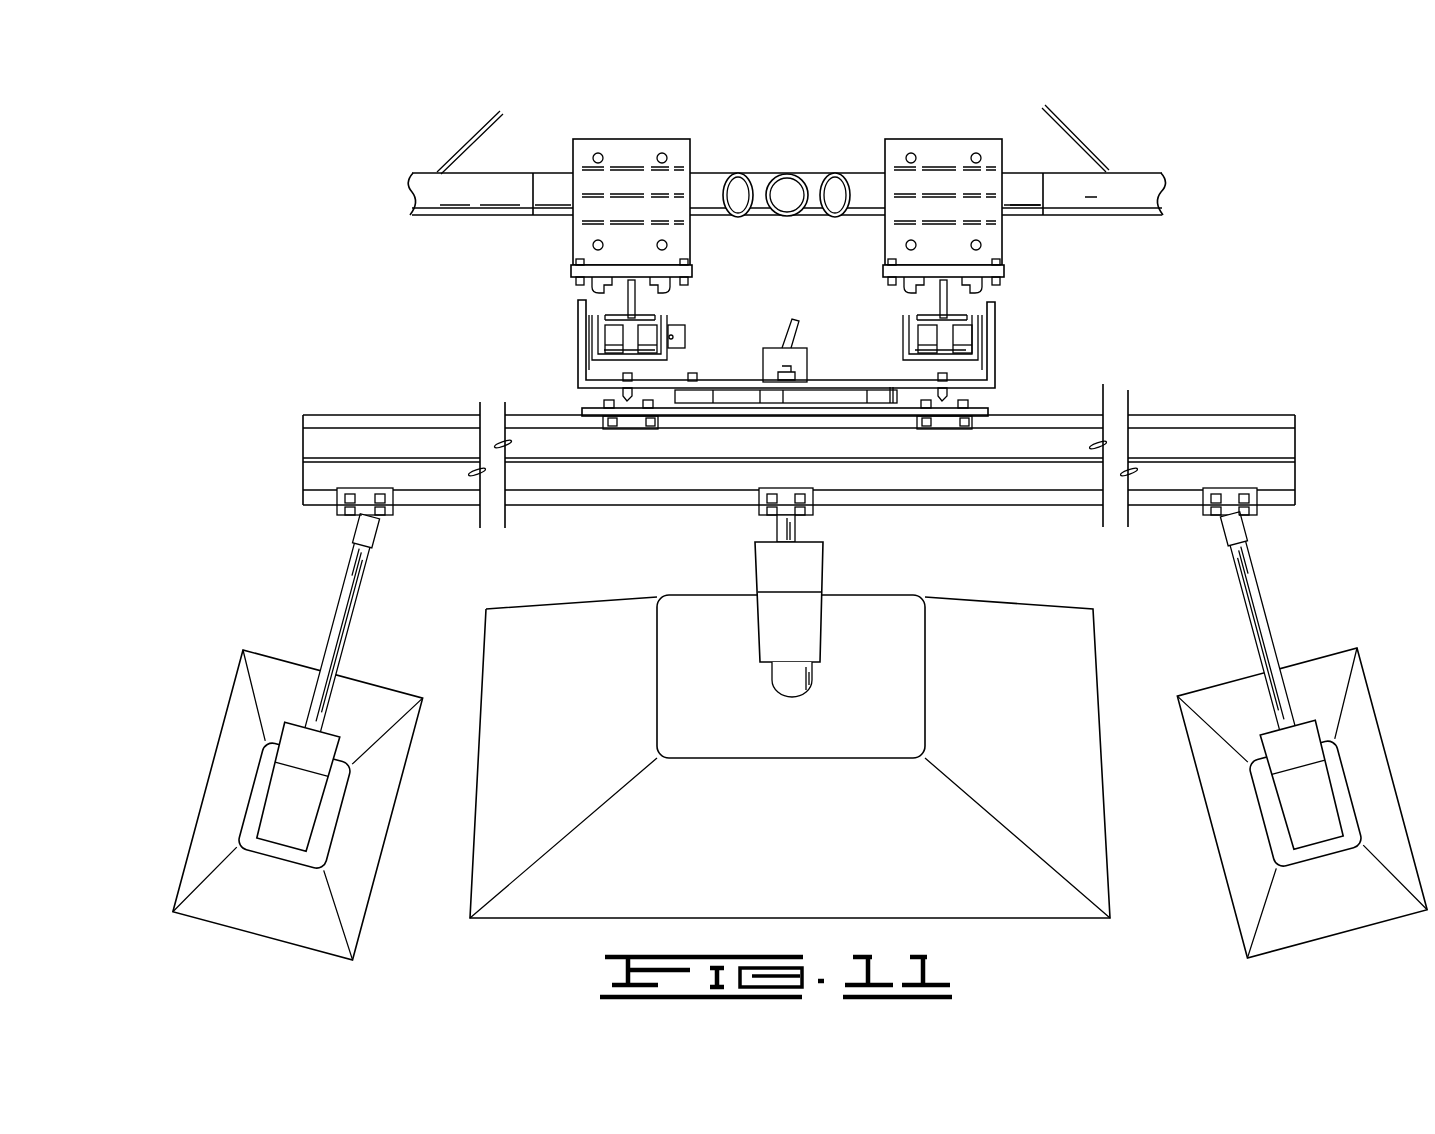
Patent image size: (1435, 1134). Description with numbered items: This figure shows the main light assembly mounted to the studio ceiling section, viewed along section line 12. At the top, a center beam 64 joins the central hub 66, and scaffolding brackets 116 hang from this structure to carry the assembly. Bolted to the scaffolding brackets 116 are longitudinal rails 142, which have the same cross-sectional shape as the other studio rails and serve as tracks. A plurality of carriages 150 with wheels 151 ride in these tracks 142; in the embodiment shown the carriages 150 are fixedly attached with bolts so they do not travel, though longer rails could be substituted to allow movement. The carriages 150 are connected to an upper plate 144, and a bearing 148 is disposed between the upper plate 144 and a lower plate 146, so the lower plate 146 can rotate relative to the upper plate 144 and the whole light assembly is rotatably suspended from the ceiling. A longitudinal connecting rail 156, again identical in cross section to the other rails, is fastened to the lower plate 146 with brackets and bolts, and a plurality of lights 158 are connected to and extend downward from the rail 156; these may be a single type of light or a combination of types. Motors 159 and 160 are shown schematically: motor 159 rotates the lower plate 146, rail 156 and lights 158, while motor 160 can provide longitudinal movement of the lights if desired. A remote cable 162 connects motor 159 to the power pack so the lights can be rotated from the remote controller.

The section line 12- 12 is at (1140, 121).
The center beam 64 is at (428, 206).
The central hub 66 is at (549, 178).
The scaffolding bracket 116 is at (636, 148).
The longitudinal rail 142 is at (625, 296).
The upper plate 144 is at (995, 340).
The lower plate 146 is at (983, 412).
The bearing 148 is at (713, 392).
The carriage 150 is at (670, 365).
The wheel 151 is at (648, 327).
The longitudinal connecting rail 156 is at (1237, 418).
The light 158 is at (1003, 622).
The motor 159 is at (800, 365).
The motor 160 is at (678, 332).
The remote cable 162 is at (789, 318).